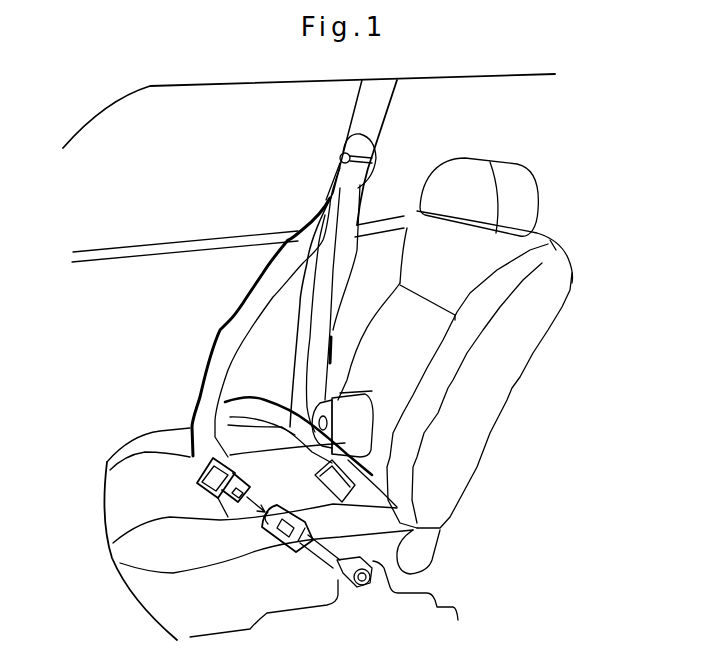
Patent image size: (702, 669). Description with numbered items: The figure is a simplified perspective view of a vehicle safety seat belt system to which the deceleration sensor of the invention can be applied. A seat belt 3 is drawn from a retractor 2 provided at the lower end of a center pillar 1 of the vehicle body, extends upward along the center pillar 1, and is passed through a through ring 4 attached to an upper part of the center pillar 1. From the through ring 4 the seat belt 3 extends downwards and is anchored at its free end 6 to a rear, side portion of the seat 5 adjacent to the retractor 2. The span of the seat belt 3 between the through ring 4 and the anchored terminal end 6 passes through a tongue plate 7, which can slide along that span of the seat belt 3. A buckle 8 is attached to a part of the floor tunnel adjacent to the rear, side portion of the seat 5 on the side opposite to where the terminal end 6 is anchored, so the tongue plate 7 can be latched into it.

The center pillar 1 is at (322, 303).
The retractor 2 is at (366, 420).
The seat belt 3 is at (357, 218).
The through ring 4 is at (378, 160).
The seat 5 is at (170, 431).
The free end 6 is at (322, 490).
The tongue plate 7 is at (205, 497).
The buckle 8 is at (289, 546).